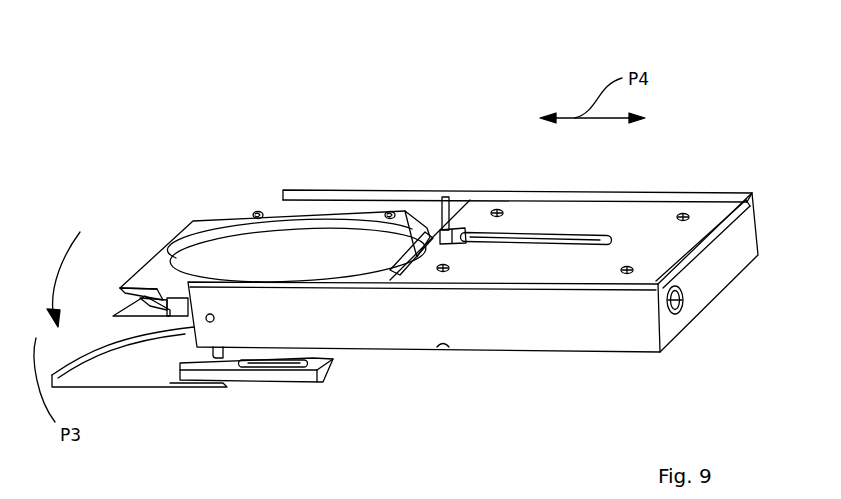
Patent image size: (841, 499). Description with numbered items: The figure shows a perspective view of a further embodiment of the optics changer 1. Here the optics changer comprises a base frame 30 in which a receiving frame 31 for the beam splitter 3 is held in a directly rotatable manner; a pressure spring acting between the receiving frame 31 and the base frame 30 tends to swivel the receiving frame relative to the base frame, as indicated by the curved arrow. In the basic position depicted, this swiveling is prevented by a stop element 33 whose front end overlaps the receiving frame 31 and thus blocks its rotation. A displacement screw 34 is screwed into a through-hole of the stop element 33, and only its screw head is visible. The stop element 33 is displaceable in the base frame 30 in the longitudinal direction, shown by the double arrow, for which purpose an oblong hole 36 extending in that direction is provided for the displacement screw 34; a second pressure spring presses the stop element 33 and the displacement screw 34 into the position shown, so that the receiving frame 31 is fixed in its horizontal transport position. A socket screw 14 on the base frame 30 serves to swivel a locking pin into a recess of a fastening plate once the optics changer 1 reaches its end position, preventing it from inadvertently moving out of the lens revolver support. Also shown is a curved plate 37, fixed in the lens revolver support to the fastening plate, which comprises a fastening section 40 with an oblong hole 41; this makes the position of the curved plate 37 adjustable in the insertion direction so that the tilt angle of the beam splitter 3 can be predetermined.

The optics changer 1 is at (445, 175).
The beam splitter 3 is at (287, 248).
The socket screw 14 is at (683, 303).
The base frame 30 is at (472, 350).
The receiving frame 31 is at (193, 224).
The stop element 33 is at (425, 232).
The displacement screw 34 is at (442, 227).
The oblong hole 36 is at (543, 233).
The curved plate 37 is at (100, 388).
The fastening section 40 is at (242, 382).
The oblong hole 41 is at (318, 372).